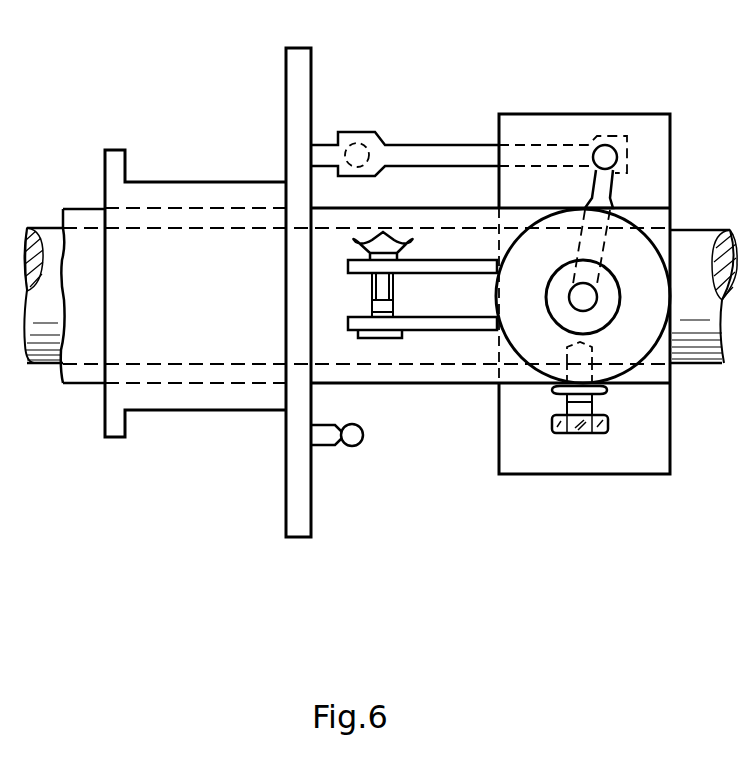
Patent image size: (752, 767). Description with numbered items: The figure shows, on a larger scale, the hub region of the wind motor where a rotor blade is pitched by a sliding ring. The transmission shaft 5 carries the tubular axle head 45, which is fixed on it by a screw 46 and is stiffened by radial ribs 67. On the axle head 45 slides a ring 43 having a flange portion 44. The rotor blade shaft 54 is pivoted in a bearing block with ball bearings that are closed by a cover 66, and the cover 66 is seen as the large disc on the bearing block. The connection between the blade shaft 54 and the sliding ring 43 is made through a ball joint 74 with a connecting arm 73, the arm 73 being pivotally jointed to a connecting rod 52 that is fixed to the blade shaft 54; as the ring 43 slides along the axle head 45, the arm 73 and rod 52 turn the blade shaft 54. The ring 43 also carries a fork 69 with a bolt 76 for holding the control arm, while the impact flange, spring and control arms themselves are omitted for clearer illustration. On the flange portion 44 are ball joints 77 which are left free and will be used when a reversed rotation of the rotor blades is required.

The transmission shaft 5 is at (695, 248).
The ring 43 is at (229, 402).
The flange portion 44 is at (304, 58).
The axle head 45 is at (78, 385).
The screw 46 is at (572, 434).
The connecting rod 52 is at (597, 247).
The rotor blade shaft 54 is at (590, 297).
The cover 66 is at (527, 252).
The radial rib 67 is at (643, 452).
The fork 69 is at (453, 333).
The connecting arm 73 is at (442, 157).
The ball joint 74 is at (357, 150).
The bolt 76 is at (380, 292).
The ball joint 77 is at (356, 447).